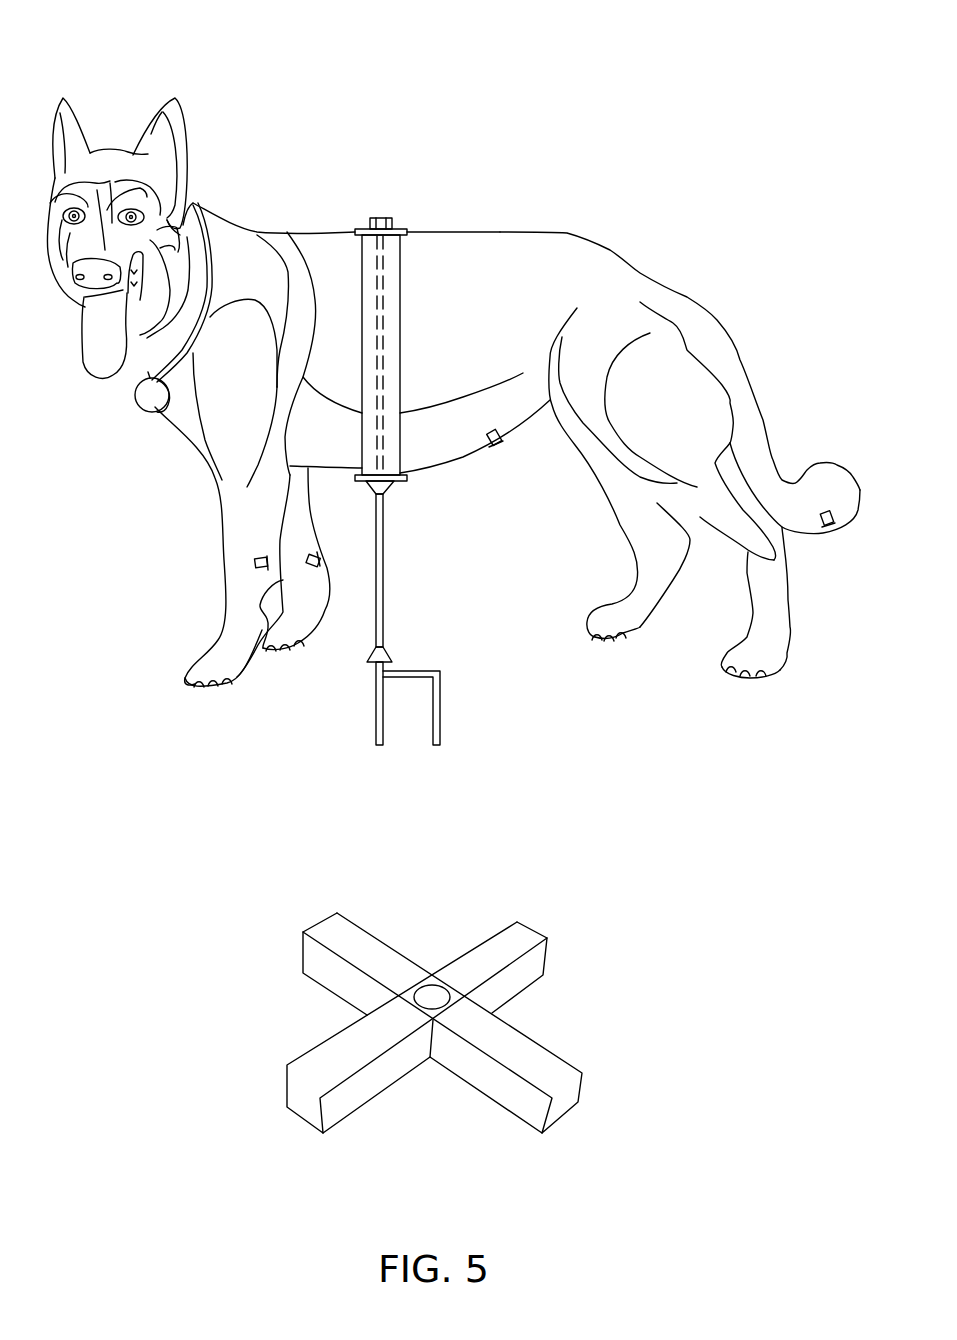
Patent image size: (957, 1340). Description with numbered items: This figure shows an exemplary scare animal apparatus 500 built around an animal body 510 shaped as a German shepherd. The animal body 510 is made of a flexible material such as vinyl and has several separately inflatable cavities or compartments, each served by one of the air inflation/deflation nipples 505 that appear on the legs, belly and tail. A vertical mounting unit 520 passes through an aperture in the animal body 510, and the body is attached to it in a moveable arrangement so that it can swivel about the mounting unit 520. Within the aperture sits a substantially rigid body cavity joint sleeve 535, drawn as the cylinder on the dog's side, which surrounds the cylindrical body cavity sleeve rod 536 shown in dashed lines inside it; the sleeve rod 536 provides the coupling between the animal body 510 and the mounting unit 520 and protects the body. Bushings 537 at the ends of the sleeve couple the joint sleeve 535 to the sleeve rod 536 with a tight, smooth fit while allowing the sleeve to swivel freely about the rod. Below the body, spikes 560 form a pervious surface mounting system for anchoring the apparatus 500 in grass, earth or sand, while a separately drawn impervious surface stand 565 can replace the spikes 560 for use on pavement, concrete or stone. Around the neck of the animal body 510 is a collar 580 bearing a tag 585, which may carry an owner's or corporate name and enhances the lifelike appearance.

The apparatus 500 is at (783, 29).
The animal body 510 is at (157, 107).
The collar 580 is at (221, 237).
The tag 585 is at (147, 400).
The body cavity joint sleeve 535 is at (403, 280).
The body cavity sleeve rod 536 is at (387, 365).
The bushings 537 is at (401, 217).
The mounting unit 520 is at (388, 624).
The spikes 560 is at (454, 713).
The air inflation/deflation nipples 505 is at (289, 567).
The impervious surface stand 565 is at (539, 919).